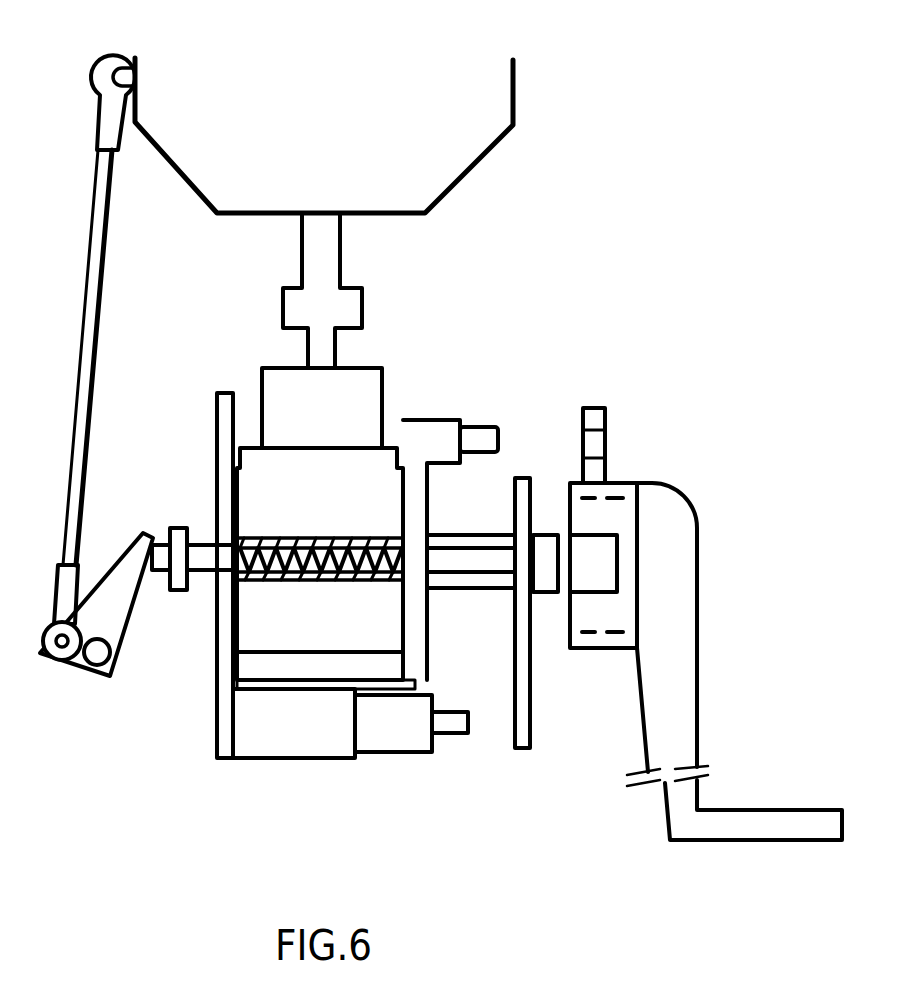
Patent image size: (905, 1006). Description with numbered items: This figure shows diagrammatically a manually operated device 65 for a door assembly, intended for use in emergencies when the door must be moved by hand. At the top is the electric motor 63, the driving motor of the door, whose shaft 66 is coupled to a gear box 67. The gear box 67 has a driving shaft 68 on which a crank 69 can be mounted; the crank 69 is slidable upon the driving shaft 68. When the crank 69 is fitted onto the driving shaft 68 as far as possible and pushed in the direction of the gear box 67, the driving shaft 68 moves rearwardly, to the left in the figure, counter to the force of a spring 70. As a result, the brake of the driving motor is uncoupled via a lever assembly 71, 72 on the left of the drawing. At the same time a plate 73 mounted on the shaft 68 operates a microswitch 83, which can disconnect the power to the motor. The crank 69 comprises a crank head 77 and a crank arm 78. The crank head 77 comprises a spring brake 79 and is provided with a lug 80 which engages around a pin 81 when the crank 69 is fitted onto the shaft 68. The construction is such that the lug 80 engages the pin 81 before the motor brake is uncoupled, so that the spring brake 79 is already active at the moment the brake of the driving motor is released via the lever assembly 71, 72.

The electric motor 63 is at (335, 152).
The manually operated device 65 is at (502, 338).
The shaft 66 is at (343, 270).
The gear box 67 is at (382, 457).
The driving shaft 68 is at (467, 590).
The crank 69 is at (632, 470).
The spring 70 is at (245, 585).
The lever assembly 71 is at (133, 562).
The lever assembly 72 is at (78, 437).
The plate 73 is at (535, 713).
The crank head 77 is at (627, 532).
The crank arm 78 is at (673, 613).
The spring brake 79 is at (593, 640).
The lug 80 is at (585, 415).
The pin 81 is at (472, 433).
The microswitch 83 is at (392, 727).